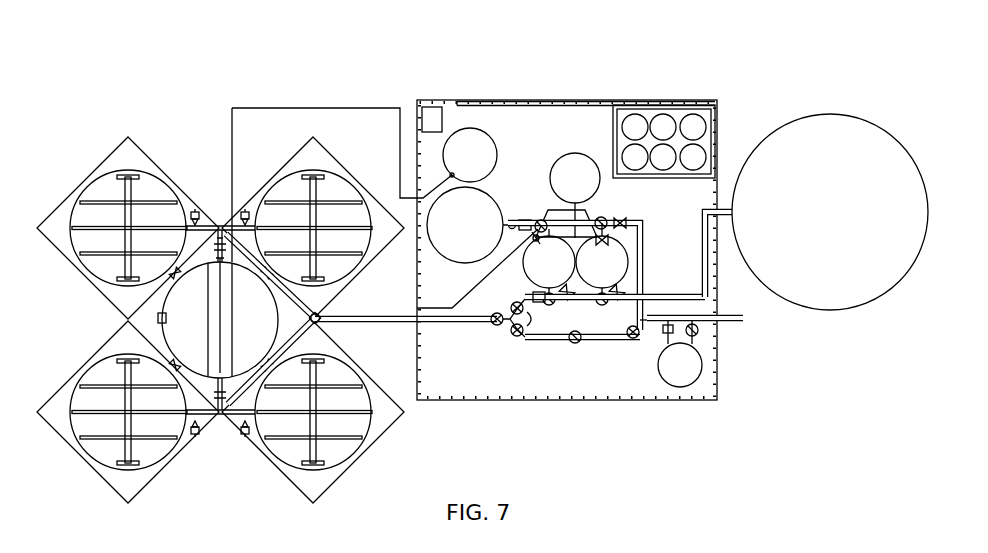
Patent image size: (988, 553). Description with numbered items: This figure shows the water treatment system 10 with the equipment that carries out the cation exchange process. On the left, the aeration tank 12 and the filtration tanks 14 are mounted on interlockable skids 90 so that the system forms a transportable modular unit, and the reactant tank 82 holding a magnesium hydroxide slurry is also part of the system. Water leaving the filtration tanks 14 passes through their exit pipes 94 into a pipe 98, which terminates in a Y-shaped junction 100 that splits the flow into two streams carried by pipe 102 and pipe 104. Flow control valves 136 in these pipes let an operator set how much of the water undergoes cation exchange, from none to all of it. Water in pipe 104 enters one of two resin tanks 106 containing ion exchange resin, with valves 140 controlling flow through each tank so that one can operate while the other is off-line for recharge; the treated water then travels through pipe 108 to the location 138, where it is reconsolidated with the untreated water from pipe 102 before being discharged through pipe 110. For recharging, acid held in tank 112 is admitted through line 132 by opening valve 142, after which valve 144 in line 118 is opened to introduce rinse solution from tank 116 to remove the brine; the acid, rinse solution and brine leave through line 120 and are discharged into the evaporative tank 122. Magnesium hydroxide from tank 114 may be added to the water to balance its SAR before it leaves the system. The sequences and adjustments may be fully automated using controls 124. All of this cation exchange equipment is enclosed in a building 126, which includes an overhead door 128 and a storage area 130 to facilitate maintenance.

The water treatment system 10 is at (188, 63).
The aeration tank 12 is at (218, 318).
The filtration tank 14 is at (221, 320).
The reactant tank 82 is at (470, 155).
The skid 90 is at (120, 153).
The exit pipe 94 is at (212, 222).
The pipe 98 is at (378, 323).
The junction 100 is at (502, 338).
The pipe 102 is at (550, 340).
The pipe 104 is at (524, 300).
The resin tank 106 is at (484, 270).
The pipe 108 is at (642, 220).
The pipe 110 is at (738, 322).
The acid tank 112 is at (484, 225).
The magnesium hydroxide tank 114 is at (680, 365).
The rinse solution tank 116 is at (568, 195).
The line 118 is at (612, 210).
The line 120 is at (703, 250).
The evaporative tank 122 is at (830, 212).
The controls 124 is at (437, 106).
The building 126 is at (548, 400).
The overhead door 128 is at (490, 100).
The storage area 130 is at (681, 112).
The line 132 is at (548, 222).
The flow control valve 136 is at (545, 322).
The reconsolidation location 138 is at (659, 313).
The valve 140 is at (632, 338).
The valve 142 is at (540, 238).
The valve 144 is at (588, 236).